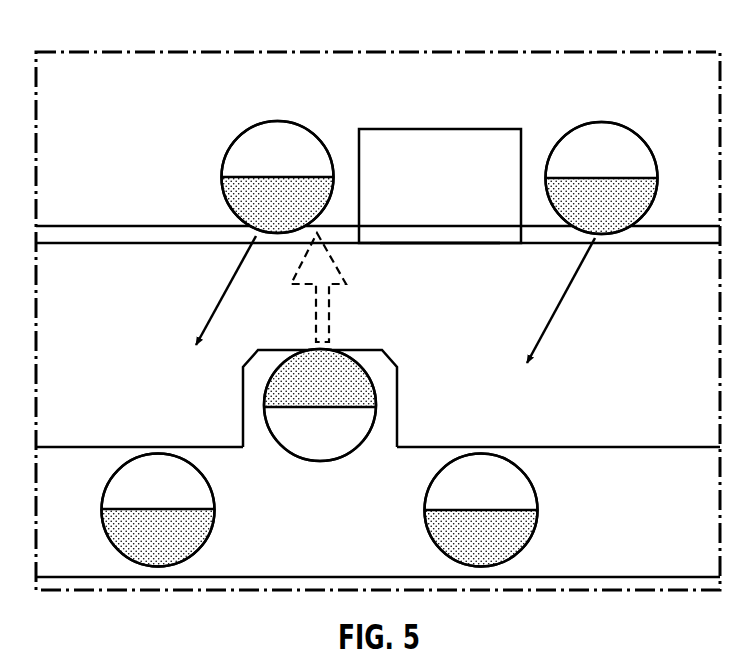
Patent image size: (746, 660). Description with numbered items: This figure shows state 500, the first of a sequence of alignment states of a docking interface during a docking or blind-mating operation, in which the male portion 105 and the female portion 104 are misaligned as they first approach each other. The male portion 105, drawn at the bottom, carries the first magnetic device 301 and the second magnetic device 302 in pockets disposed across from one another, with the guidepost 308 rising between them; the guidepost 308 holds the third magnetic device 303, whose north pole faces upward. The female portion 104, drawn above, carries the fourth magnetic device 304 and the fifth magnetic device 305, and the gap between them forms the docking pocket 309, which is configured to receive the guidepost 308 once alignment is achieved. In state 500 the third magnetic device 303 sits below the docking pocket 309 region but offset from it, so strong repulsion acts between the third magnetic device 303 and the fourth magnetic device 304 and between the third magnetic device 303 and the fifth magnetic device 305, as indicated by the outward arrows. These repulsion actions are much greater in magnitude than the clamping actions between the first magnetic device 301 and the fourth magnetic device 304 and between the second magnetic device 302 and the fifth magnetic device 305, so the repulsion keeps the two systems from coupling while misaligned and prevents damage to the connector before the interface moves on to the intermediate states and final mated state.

The state 500 is at (104, 46).
The female portion 104 is at (437, 129).
The male portion 105 is at (103, 447).
The first magnetic device 301 is at (202, 547).
The second magnetic device 302 is at (524, 547).
The third magnetic device 303 is at (365, 375).
The fourth magnetic device 304 is at (233, 146).
The fifth magnetic device 305 is at (637, 134).
The guidepost 308 is at (277, 340).
The docking pocket 309 is at (445, 250).